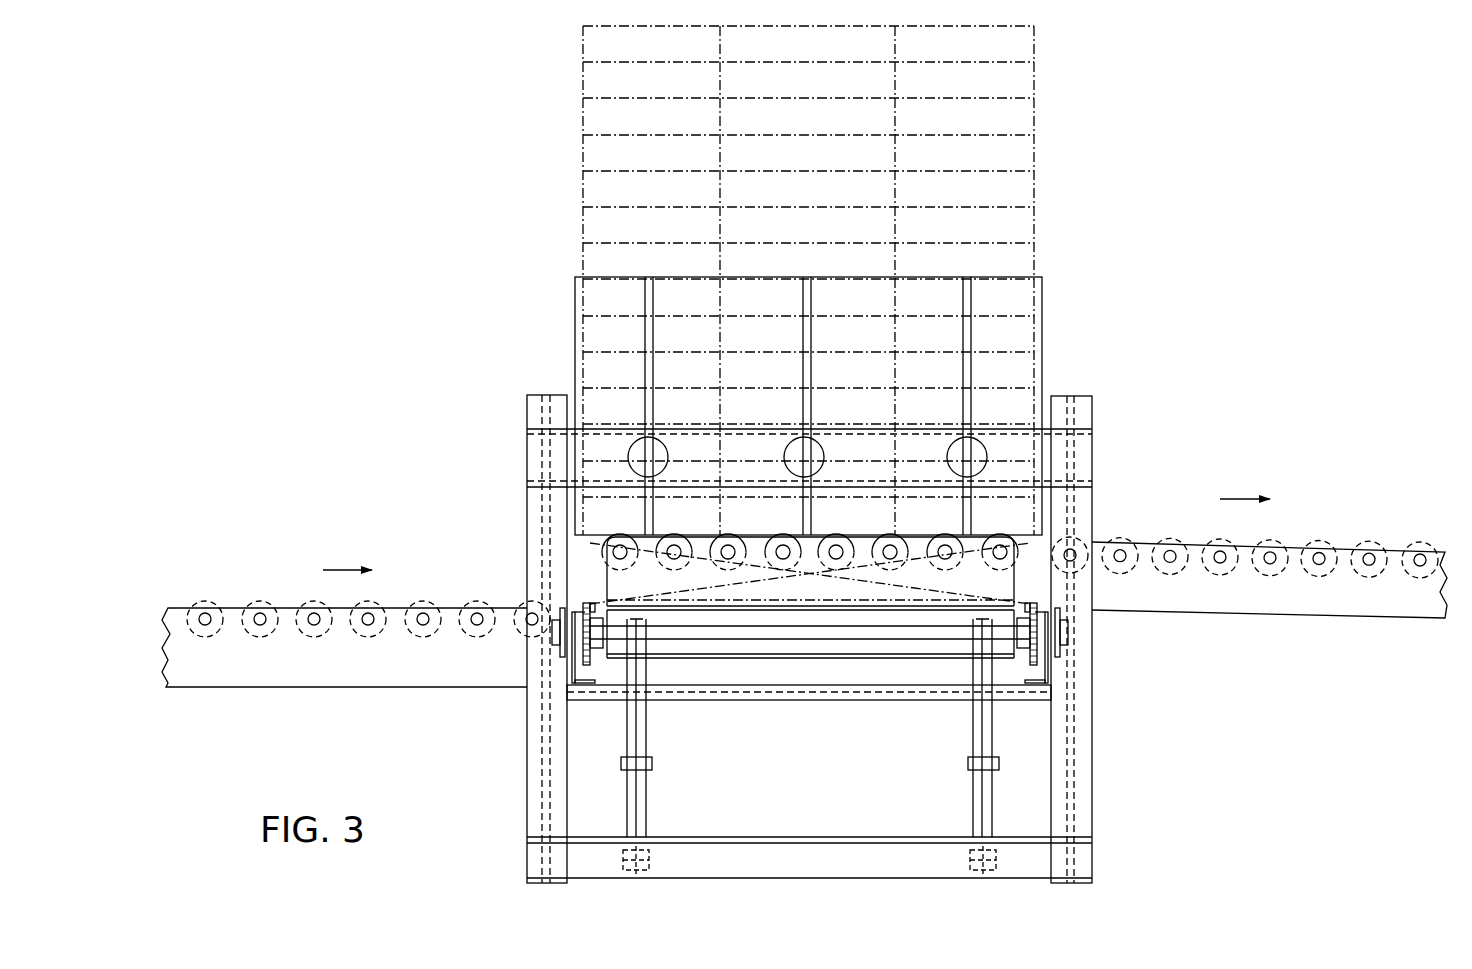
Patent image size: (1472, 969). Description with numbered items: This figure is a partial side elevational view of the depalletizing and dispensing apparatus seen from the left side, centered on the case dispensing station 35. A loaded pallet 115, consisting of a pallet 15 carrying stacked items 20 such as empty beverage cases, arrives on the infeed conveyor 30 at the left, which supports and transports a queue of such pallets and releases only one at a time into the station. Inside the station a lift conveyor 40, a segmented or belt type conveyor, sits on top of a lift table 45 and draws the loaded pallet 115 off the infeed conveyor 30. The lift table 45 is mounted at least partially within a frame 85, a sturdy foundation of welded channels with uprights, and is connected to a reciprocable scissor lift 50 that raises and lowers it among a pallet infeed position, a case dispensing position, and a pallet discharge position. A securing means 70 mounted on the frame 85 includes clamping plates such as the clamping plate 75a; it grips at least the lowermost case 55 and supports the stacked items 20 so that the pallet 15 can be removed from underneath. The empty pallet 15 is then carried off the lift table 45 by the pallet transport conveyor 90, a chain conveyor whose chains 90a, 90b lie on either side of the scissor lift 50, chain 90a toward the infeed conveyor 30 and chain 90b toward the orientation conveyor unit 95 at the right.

The pallet 15 is at (585, 547).
The stacked items 20 is at (1035, 138).
The infeed conveyor 30 is at (235, 608).
The case dispensing station 35 is at (759, 524).
The lift conveyor 40 is at (809, 574).
The lift table 45 is at (827, 597).
The scissor lift 50 is at (647, 738).
The lowermost case 55 is at (1000, 500).
The securing means 70 is at (839, 387).
The clamping plate 75a is at (1042, 327).
The frame 85 is at (540, 395).
The pallet transport conveyor 90 is at (802, 652).
The chain 90a is at (584, 604).
The chain 90b is at (1047, 587).
The orientation conveyor unit 95 is at (1343, 543).
The loaded pallet 115 is at (563, 145).